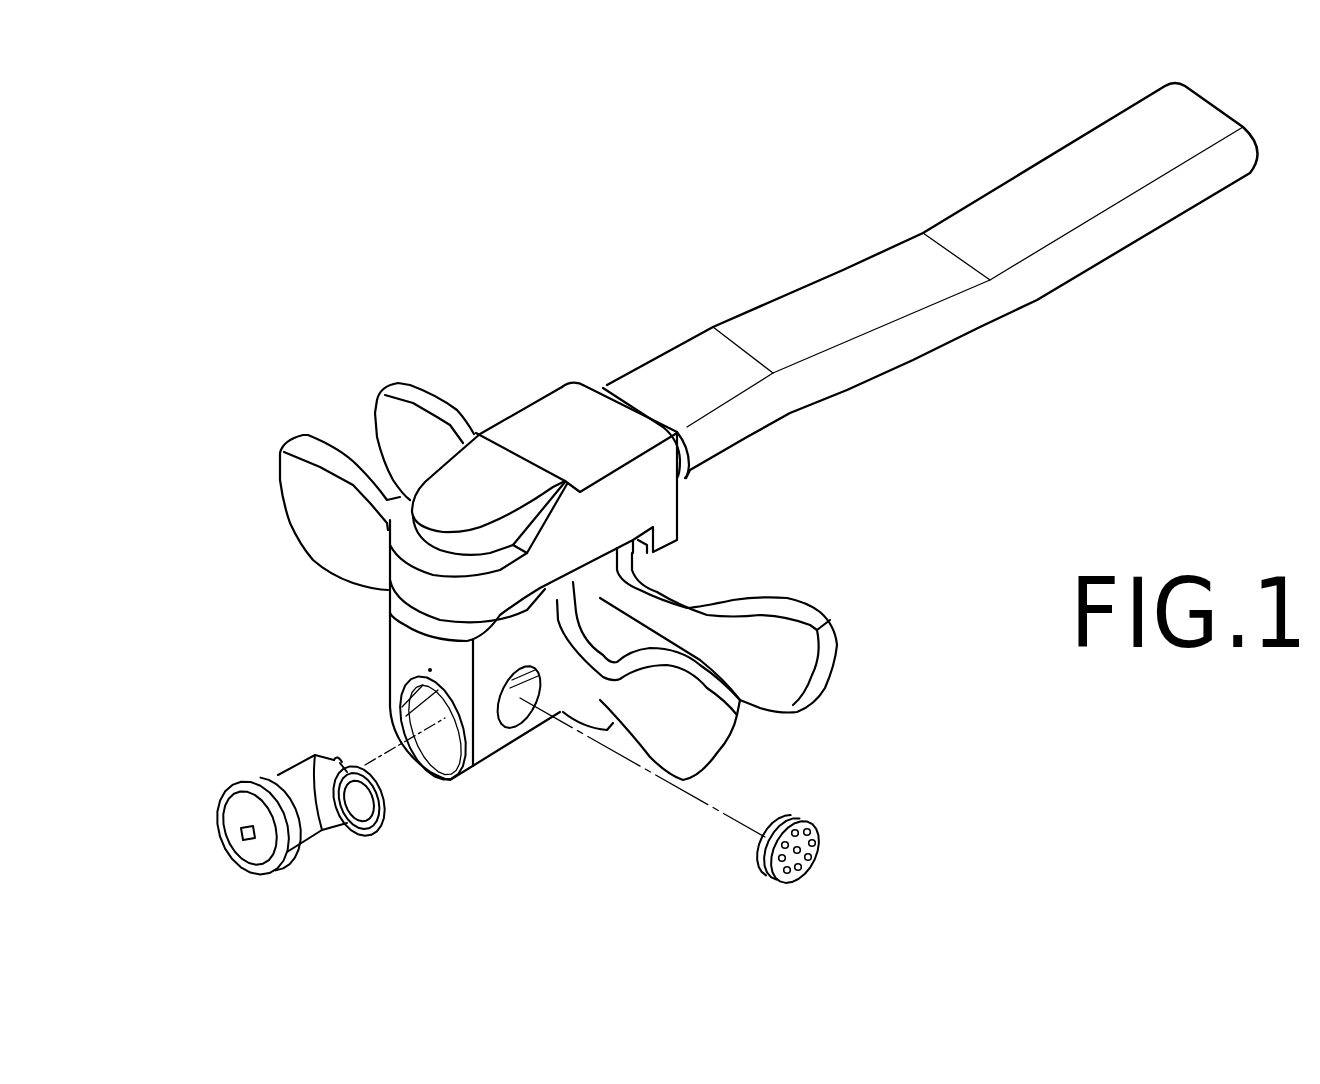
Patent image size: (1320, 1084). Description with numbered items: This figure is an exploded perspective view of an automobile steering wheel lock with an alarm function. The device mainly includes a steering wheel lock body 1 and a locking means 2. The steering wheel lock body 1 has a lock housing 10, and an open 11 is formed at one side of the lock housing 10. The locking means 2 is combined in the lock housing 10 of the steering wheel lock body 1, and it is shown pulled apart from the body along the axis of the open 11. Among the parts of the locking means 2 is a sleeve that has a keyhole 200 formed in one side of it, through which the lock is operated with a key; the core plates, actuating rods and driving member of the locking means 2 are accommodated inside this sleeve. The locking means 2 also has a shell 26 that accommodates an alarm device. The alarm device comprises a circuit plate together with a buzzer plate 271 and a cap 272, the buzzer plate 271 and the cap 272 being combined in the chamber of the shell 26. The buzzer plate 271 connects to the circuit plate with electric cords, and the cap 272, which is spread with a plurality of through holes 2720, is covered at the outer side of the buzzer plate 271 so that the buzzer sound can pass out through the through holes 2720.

The steering wheel lock body 1 is at (932, 280).
The locking means 2 is at (273, 782).
The lock housing 10 is at (373, 702).
The open 11 is at (526, 759).
The shell 26 is at (277, 679).
The keyhole 200 is at (222, 890).
The buzzer plate 271 is at (359, 869).
The cap 272 is at (862, 849).
The through holes 2720 is at (873, 831).